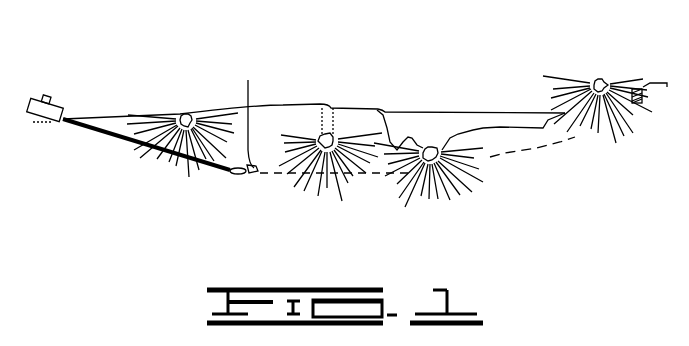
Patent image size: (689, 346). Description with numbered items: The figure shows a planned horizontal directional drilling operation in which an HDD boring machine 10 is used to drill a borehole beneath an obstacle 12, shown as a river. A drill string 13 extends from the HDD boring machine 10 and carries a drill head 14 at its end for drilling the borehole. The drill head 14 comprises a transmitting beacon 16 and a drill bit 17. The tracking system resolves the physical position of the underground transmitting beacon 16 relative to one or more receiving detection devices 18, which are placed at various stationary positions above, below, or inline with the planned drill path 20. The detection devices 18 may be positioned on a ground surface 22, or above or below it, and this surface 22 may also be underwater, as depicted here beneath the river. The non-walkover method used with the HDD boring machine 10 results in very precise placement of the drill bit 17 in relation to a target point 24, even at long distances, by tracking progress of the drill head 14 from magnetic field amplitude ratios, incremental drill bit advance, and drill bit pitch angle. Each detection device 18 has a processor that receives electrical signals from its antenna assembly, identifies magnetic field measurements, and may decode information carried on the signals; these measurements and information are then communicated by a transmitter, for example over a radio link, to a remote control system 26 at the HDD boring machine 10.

The HDD boring machine 10 is at (50, 101).
The obstacle 12 is at (413, 112).
The drill string 13 is at (88, 130).
The drill head 14 is at (247, 174).
The transmitting beacon 16 is at (233, 175).
The drill bit 17 is at (248, 80).
The detection devices 18 is at (184, 112).
The planned drill path 20 is at (520, 153).
The surface 22 is at (88, 117).
The target point 24 is at (643, 100).
The control system 26 is at (43, 95).